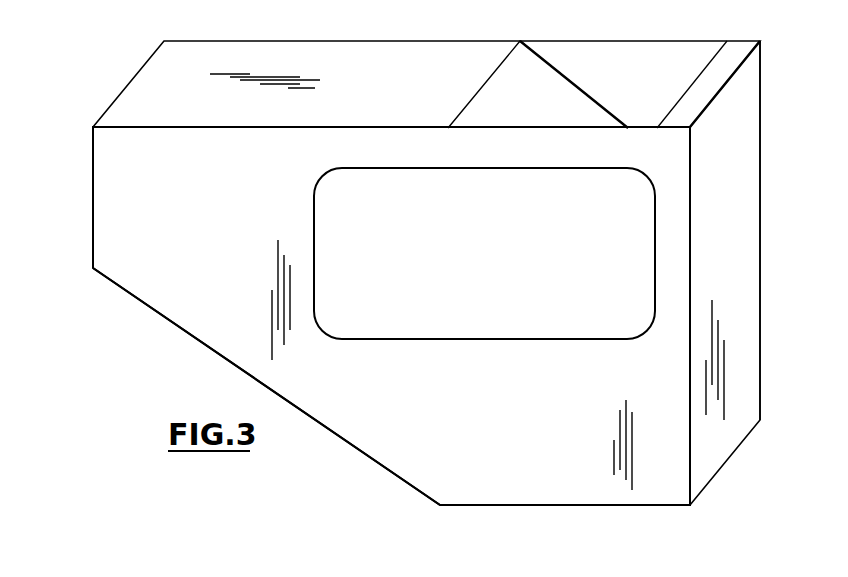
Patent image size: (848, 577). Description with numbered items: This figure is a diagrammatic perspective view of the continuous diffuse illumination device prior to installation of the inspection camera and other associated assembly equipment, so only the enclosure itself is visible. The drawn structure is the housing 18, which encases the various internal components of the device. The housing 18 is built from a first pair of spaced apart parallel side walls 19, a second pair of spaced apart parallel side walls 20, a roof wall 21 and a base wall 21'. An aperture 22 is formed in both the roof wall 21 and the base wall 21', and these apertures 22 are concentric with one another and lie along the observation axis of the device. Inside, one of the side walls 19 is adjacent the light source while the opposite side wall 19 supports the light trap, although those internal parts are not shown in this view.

The housing 18 is at (427, 33).
The first pair of spaced apart parallel side walls 19 is at (92, 195).
The second pair of spaced apart parallel side walls 20 is at (212, 303).
The roof wall 21 is at (251, 45).
The base wall 21' is at (498, 396).
The aperture 22 is at (667, 56).